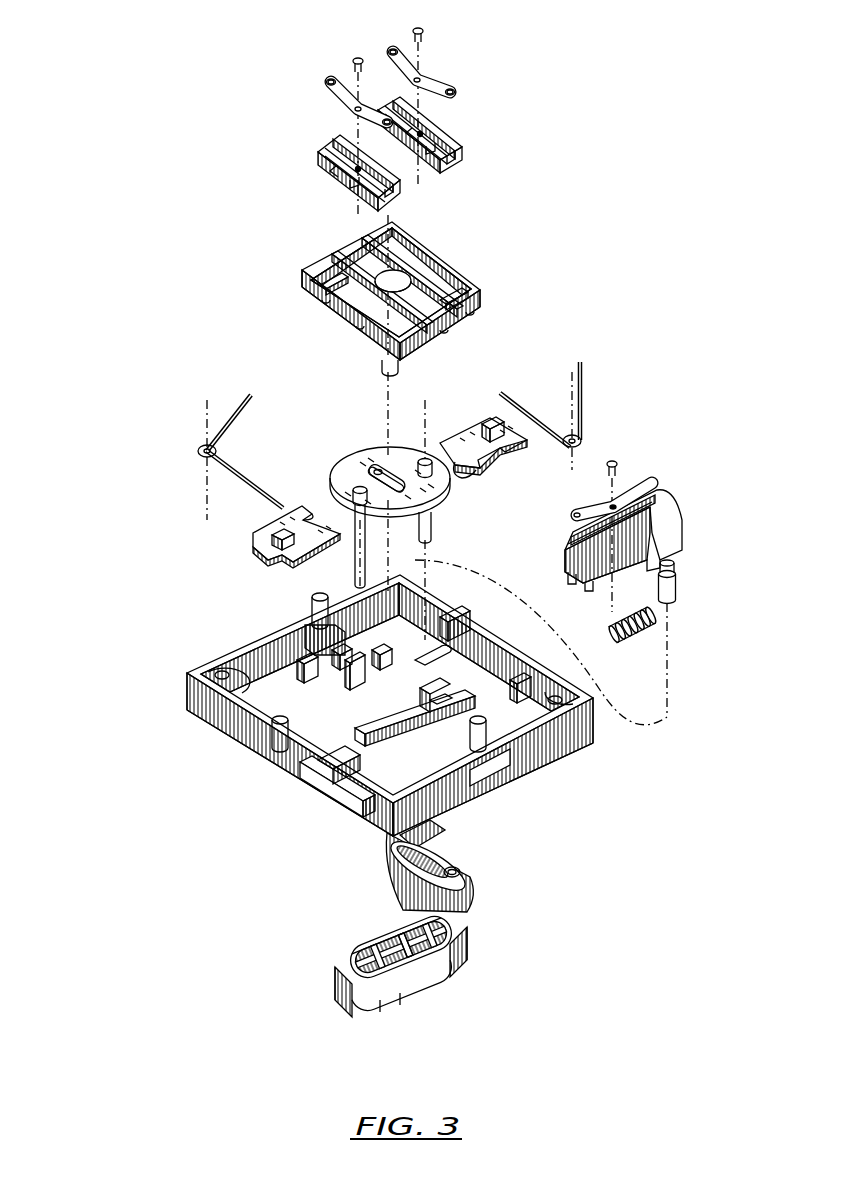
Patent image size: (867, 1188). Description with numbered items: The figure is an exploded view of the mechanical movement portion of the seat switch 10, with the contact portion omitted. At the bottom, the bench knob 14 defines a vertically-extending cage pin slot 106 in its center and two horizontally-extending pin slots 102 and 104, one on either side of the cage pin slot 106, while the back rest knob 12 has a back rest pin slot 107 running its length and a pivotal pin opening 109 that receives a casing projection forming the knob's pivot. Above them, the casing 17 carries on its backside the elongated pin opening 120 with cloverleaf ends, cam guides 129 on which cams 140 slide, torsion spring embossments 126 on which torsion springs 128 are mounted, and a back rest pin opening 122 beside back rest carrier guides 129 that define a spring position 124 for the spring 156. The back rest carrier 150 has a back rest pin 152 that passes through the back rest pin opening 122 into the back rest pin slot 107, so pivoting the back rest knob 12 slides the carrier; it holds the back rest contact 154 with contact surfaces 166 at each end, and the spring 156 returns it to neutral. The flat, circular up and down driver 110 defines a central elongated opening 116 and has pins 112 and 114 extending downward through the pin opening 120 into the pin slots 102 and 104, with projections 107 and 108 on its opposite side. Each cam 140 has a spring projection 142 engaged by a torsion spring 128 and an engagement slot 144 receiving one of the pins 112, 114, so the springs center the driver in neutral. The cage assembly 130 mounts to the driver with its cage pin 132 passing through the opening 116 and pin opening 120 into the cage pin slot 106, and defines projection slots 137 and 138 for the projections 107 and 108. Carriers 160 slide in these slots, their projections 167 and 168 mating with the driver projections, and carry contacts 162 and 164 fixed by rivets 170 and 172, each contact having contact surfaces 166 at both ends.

The seat switch 10 is at (128, 600).
The back rest knob 12 is at (390, 880).
The bench knob 14 is at (336, 992).
The casing 17 is at (585, 735).
The pin slot 102 is at (352, 962).
The pin slot 104 is at (470, 910).
The cage pin slot 106 is at (415, 962).
The back rest pin slot / projection 107 is at (356, 485).
The projection 108 is at (440, 496).
The pivotal pin opening 109 is at (461, 872).
The up and down driver 110 is at (405, 450).
The pin 112 is at (355, 560).
The pin 114 is at (432, 528).
The central elongated opening 116 is at (380, 470).
The pin opening 120 is at (358, 730).
The back rest pin opening 122 is at (435, 653).
The spring position 124 is at (345, 655).
The torsion spring embossments 126 is at (275, 725).
The torsion springs 128 is at (245, 400).
The cam guides / back rest carrier guides 129 is at (345, 655).
The cage assembly 130 is at (518, 276).
The cage pin 132 is at (400, 362).
The projection slot 137 is at (340, 305).
The projection slot 138 is at (430, 272).
The cams 140 is at (500, 455).
The spring projection 142 is at (275, 532).
The engagement slot 144 is at (314, 508).
The back rest carrier 150 is at (683, 532).
The back rest pin 152 is at (678, 583).
The back rest contact 154 is at (640, 498).
The spring 156 is at (640, 637).
The carriers 160 is at (466, 152).
The contact 162 is at (325, 91).
The contact 164 is at (444, 88).
The contact surfaces 166 is at (392, 47).
The projection 167 is at (330, 175).
The projection 168 is at (440, 168).
The rivet 170 is at (357, 57).
The rivet 172 is at (421, 30).